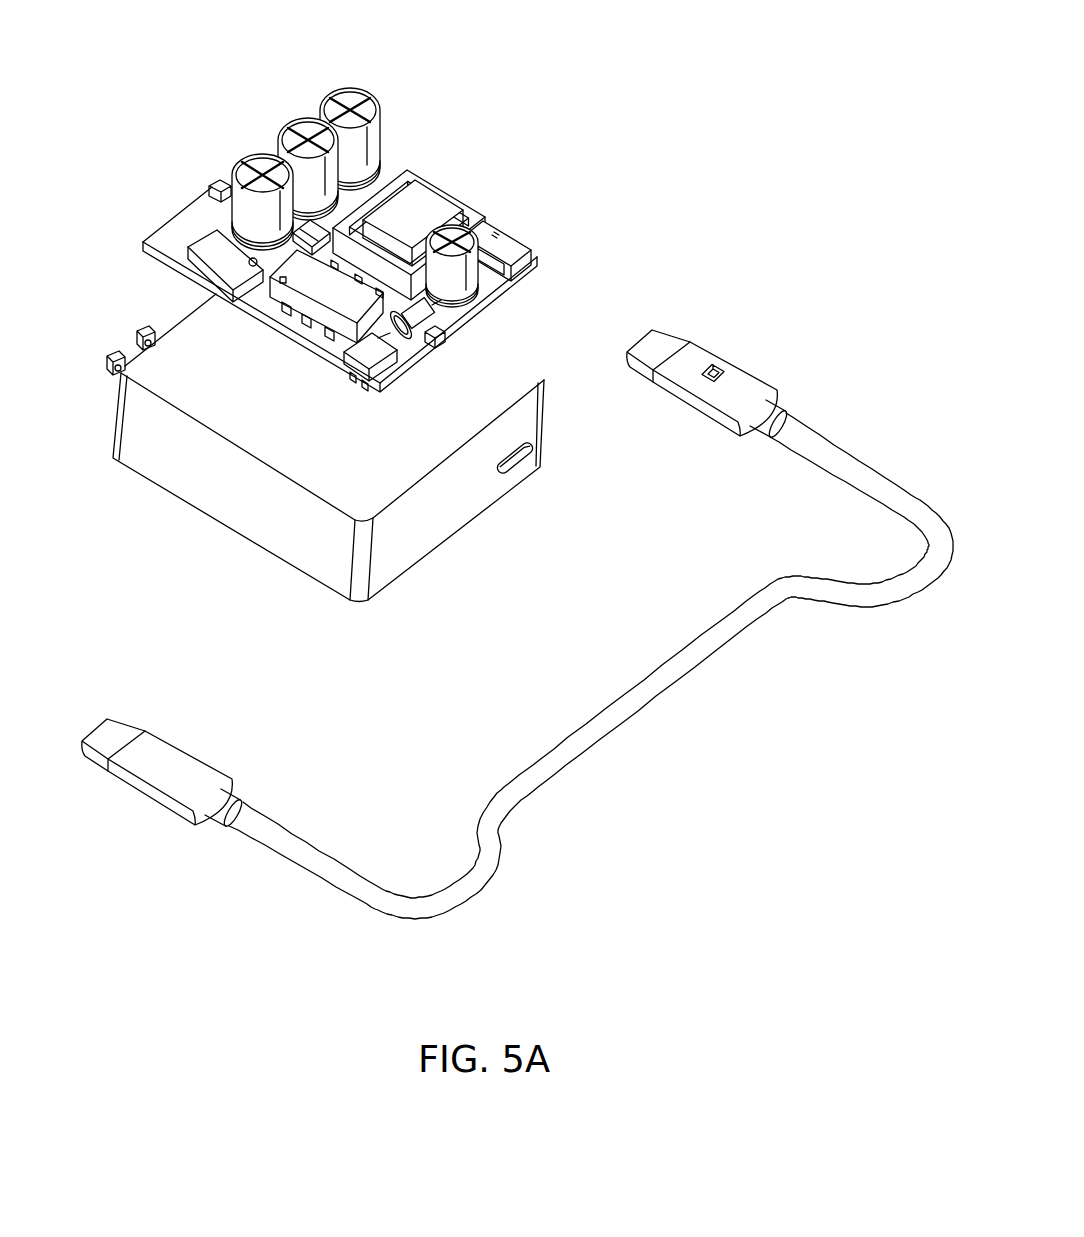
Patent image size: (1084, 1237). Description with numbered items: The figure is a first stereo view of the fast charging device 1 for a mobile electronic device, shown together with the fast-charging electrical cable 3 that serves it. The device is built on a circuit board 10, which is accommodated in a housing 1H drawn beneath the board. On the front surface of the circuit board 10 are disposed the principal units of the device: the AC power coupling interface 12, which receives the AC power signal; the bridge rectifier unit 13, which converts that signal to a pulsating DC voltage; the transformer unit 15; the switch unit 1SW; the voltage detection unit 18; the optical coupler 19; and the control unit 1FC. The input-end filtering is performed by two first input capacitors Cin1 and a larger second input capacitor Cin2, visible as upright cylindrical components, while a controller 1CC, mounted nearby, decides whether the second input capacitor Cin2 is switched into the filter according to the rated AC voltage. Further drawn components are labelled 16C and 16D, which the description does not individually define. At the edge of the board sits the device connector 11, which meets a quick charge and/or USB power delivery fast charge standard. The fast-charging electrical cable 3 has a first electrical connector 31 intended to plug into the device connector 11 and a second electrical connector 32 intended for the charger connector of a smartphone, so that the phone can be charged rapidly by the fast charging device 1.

The fast charging device 1 is at (342, 302).
The fast-charging electrical cable 3 is at (517, 605).
The circuit board 10 is at (197, 203).
The device connector 11 is at (513, 247).
The AC power coupling interface 12 is at (113, 370).
The bridge rectifier unit 13 is at (223, 188).
The transformer unit 15 is at (430, 217).
The output capacitor 16C is at (468, 285).
The diode 16D is at (415, 313).
The voltage detection unit 18 is at (418, 328).
The optical coupler 19 is at (366, 353).
The controller 1CC is at (210, 267).
The control unit 1FC is at (297, 300).
The housing 1H is at (300, 546).
The switch unit 1SW is at (362, 186).
The first electrical connector 31 is at (743, 388).
The second electrical connector 32 is at (206, 778).
The first input capacitors Cin1 is at (348, 97).
The second input capacitor Cin2 is at (237, 213).